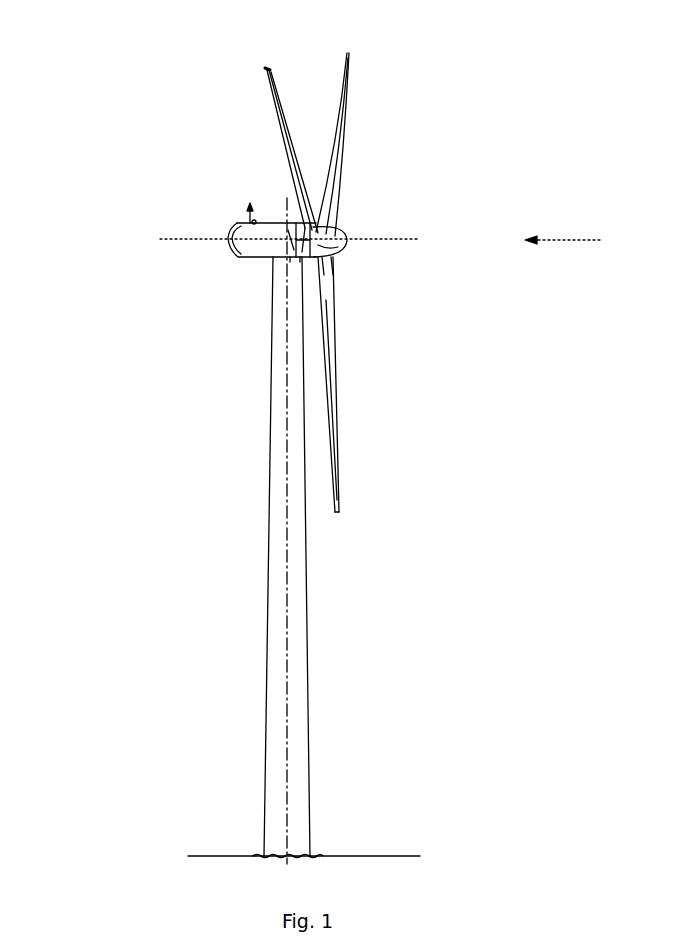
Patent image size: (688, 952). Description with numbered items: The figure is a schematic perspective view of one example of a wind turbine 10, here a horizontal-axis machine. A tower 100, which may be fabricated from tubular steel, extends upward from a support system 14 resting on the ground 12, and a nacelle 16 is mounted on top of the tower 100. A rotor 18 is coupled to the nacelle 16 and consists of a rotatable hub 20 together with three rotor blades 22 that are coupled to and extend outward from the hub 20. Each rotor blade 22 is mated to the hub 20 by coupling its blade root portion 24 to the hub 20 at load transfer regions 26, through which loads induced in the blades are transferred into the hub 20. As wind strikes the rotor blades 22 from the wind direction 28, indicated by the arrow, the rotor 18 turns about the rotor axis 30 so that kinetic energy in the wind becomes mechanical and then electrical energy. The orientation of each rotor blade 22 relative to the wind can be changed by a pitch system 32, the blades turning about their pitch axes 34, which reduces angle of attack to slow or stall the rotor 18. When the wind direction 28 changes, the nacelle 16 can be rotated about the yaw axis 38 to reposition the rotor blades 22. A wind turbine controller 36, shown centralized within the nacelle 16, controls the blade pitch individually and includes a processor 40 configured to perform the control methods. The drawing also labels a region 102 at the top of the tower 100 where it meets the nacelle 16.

The wind turbine 10 is at (100, 73).
The ground 12 is at (207, 856).
The support system 14 is at (259, 855).
The nacelle 16 is at (250, 258).
The rotor 18 is at (350, 163).
The hub 20 is at (336, 233).
The rotor blade 22 is at (347, 90).
The blade root portion 24 is at (334, 320).
The load transfer regions 26 is at (330, 256).
The wind direction 28 is at (580, 240).
The rotor axis 30 is at (405, 243).
The pitch system 32 is at (336, 275).
The pitch axes 34 is at (265, 70).
The wind turbine controller 36 is at (292, 263).
The yaw axis 38 is at (290, 590).
The processor 40 is at (296, 196).
The tower 100 is at (272, 536).
The tower top 102 is at (275, 258).